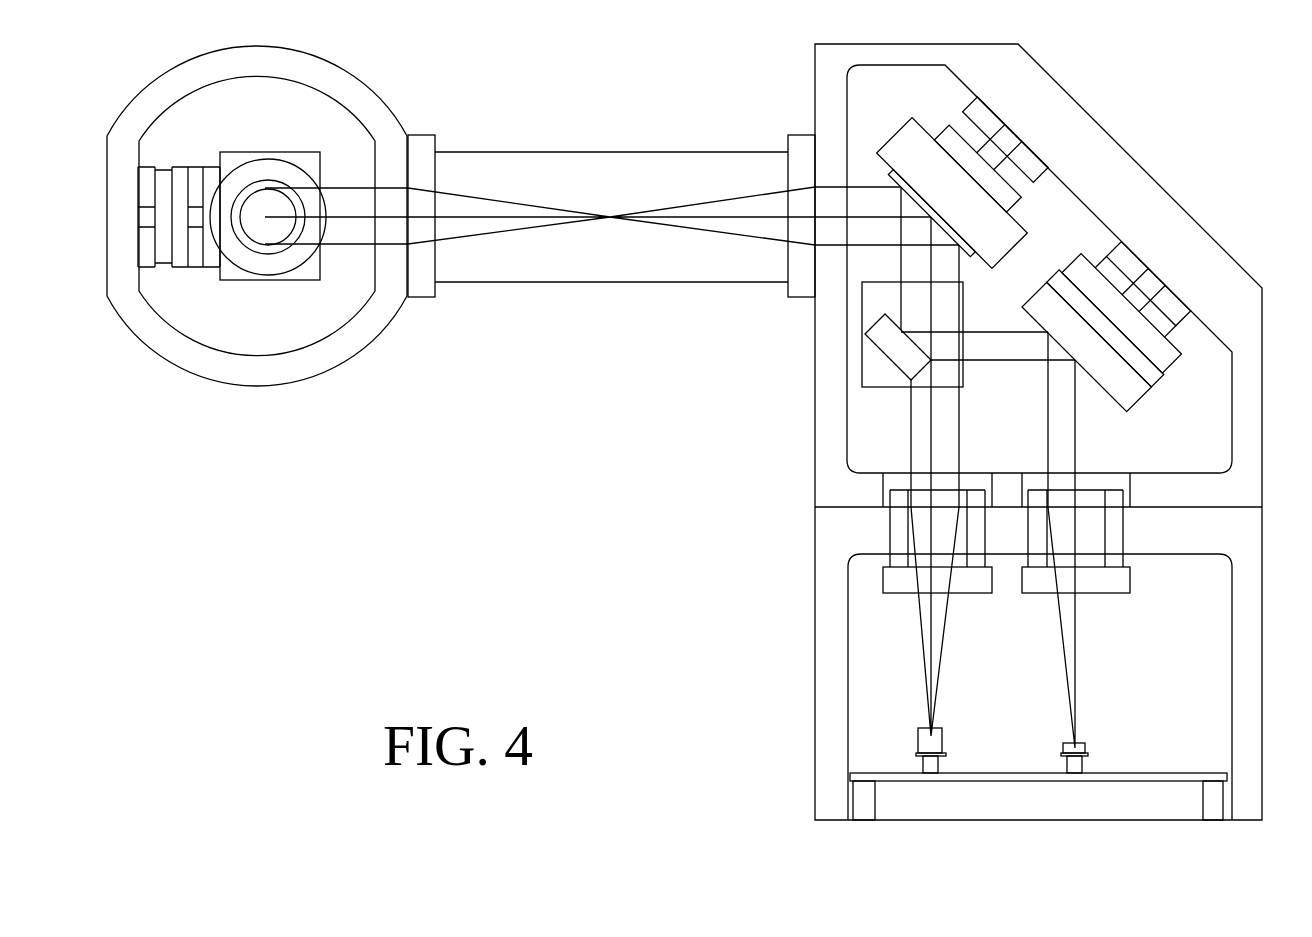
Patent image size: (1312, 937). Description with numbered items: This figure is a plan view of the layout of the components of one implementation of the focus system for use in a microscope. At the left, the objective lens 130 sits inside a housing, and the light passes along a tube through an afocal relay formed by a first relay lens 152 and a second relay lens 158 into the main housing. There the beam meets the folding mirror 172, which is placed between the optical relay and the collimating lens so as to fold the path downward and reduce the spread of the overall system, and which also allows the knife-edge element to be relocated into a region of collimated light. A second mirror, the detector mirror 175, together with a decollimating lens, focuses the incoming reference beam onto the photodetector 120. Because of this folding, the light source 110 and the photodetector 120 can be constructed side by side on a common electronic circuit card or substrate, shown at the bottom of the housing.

The light source 110 is at (937, 733).
The photodetector 120 is at (1083, 747).
The objective lens 130 is at (247, 248).
The first relay lens 152 is at (423, 290).
The second relay lens 158 is at (800, 290).
The folding mirror 172 is at (967, 254).
The detector mirror 175 is at (1133, 400).